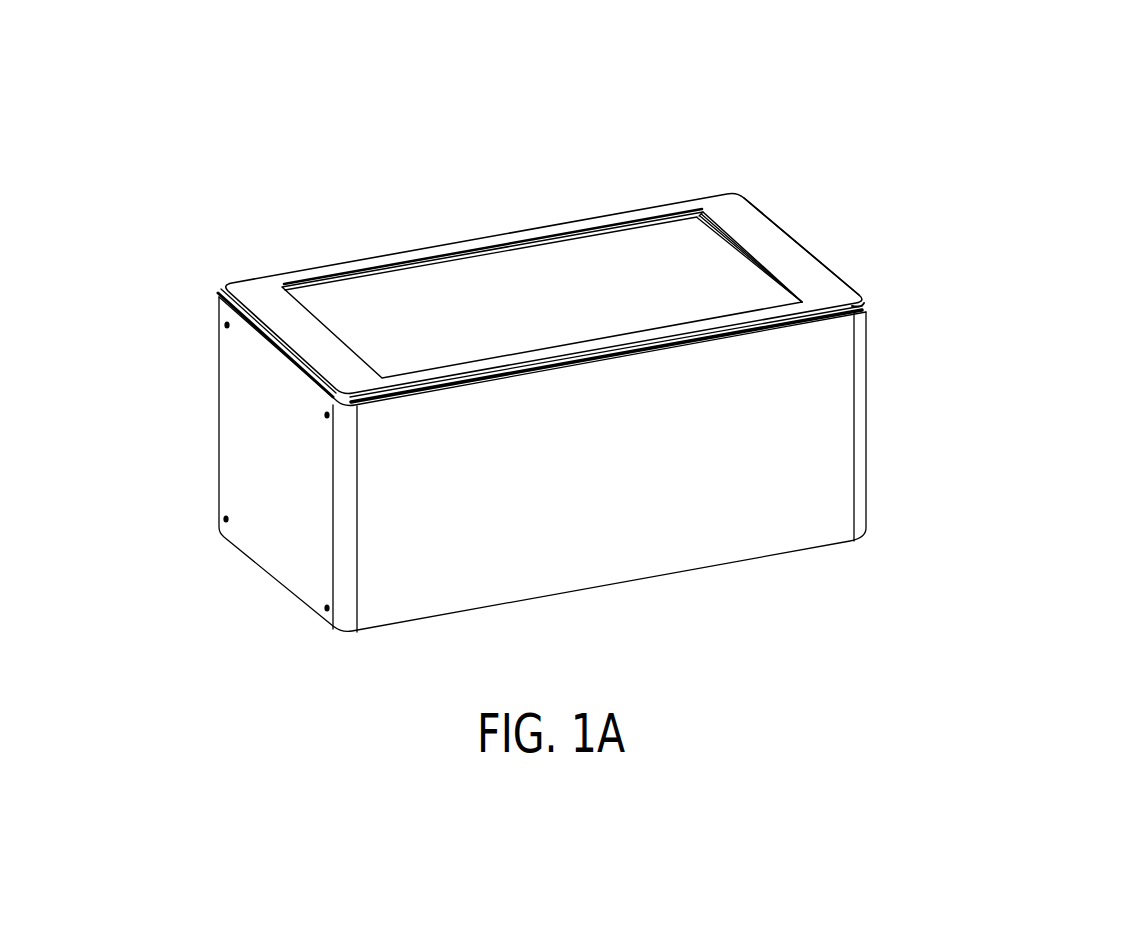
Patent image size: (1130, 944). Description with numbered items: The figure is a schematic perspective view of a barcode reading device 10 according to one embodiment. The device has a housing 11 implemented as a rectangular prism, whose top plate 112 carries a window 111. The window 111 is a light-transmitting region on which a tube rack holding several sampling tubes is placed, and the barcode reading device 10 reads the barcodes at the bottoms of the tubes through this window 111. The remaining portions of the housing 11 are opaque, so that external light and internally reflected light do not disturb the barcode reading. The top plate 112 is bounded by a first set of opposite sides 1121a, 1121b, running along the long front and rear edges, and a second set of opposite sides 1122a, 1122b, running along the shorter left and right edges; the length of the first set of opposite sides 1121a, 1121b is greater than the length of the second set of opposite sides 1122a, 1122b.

The barcode reading device 10 is at (1113, 77).
The housing 11 is at (838, 410).
The window 111 is at (610, 275).
The top plate 112 is at (559, 403).
The first set of opposite sides 1121a is at (607, 360).
The first set of opposite sides 1121b is at (478, 235).
The second set of opposite sides 1122a is at (272, 343).
The second set of opposite sides 1122b is at (808, 243).